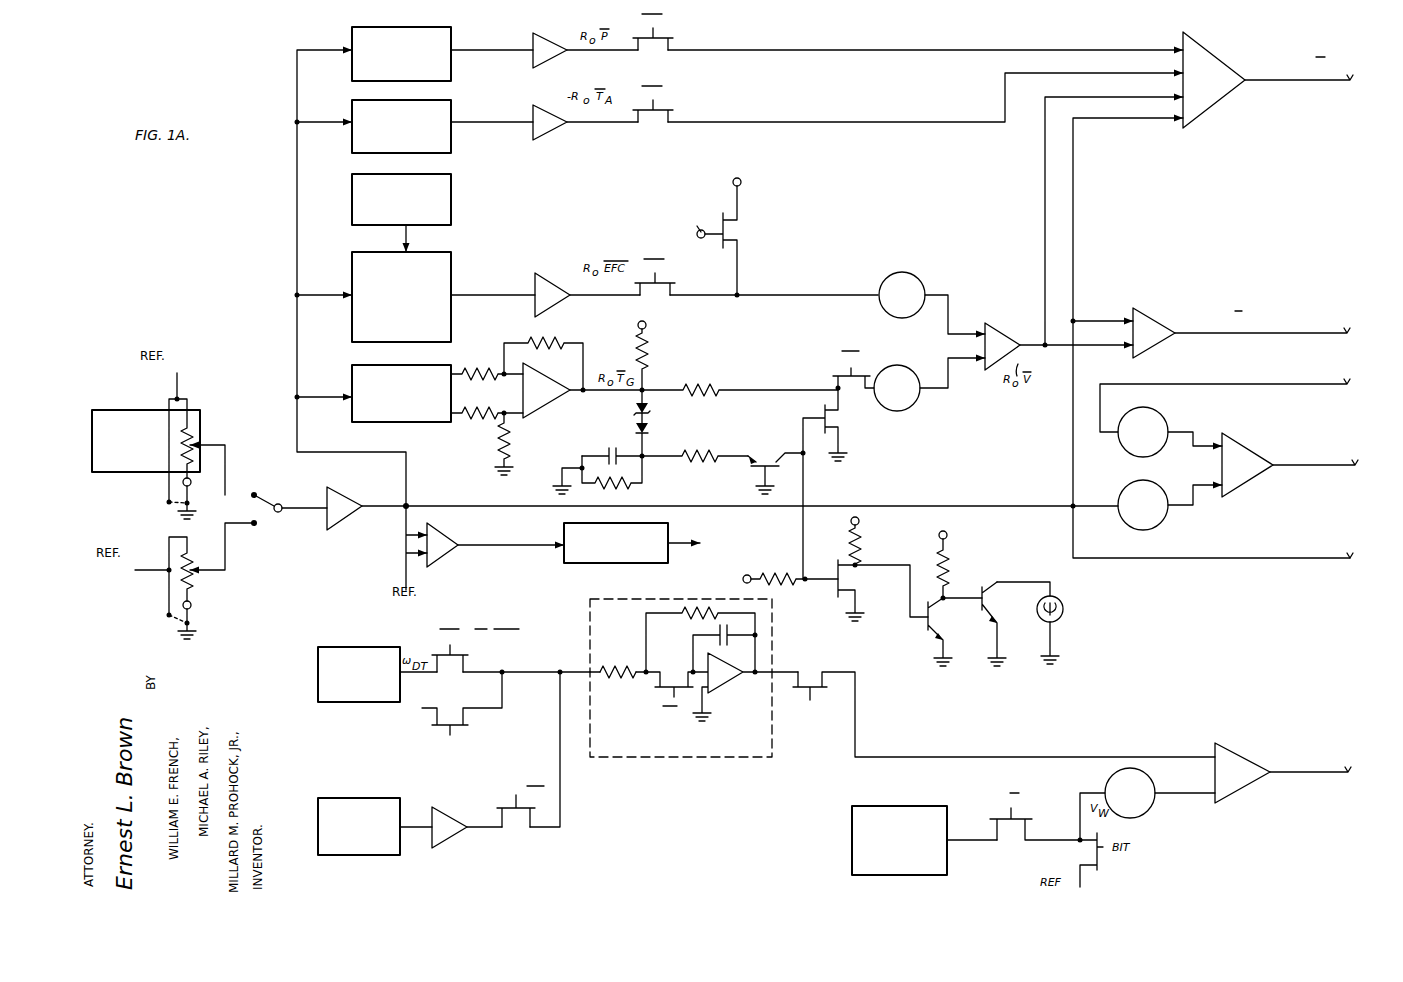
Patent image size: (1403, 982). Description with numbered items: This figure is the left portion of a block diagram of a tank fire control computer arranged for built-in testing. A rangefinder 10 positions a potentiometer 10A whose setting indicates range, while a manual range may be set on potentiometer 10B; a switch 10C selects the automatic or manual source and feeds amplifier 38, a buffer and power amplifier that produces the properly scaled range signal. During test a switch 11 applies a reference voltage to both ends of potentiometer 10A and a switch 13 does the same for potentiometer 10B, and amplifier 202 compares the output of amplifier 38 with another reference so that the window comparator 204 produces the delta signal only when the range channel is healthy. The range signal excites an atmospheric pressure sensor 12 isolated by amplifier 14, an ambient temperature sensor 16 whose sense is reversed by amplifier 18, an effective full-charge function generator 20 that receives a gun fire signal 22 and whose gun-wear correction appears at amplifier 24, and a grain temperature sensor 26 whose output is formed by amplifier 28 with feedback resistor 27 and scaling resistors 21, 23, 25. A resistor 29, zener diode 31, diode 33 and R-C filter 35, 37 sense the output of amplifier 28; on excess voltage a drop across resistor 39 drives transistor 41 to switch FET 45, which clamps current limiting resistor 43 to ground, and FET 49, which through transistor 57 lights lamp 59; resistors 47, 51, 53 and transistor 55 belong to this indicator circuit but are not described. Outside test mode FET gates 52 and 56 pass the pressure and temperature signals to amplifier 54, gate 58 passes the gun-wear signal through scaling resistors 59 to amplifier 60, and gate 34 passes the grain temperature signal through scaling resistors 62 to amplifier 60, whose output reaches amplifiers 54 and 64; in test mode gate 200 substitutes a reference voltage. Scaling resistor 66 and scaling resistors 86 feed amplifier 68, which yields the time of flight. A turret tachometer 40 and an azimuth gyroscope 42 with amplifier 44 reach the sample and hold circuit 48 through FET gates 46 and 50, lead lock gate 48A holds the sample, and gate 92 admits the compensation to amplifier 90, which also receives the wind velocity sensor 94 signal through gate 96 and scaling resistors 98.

The rangefinder 10 is at (122, 410).
The potentiometer 10A is at (195, 432).
The potentiometer 10B is at (195, 583).
The switch 10C is at (262, 508).
The switch 11 is at (192, 482).
The atmospheric pressure sensor 12 is at (451, 27).
The switch 13 is at (193, 612).
The amplifier 14 is at (530, 58).
The ambient temperature sensor 16 is at (451, 100).
The amplifier 18 is at (555, 128).
The effective full-charge function generator 20 is at (451, 252).
The scaling resistor 21 is at (512, 440).
The gun fire signal 22 is at (451, 174).
The scaling resistor 23 is at (487, 426).
The amplifier 24 is at (533, 303).
The scaling resistor 25 is at (478, 366).
The grain temperature sensor 26 is at (352, 374).
The feedback resistor 27 is at (552, 336).
The amplifier 28 is at (553, 398).
The resistor 29 is at (648, 352).
The zener diode 31 is at (650, 408).
The diode 33 is at (650, 430).
The FET gate 34 is at (858, 366).
The R-C filter resistor 35 is at (612, 480).
The R-C filter capacitor 37 is at (612, 445).
The amplifier 38 is at (340, 497).
The resistor 39 is at (702, 449).
The transistor 41 is at (768, 450).
The current limiting resistor 43 is at (703, 383).
The FET 45 is at (830, 418).
The turret tachometer 40 is at (345, 647).
The azimuth gyroscope 42 is at (360, 855).
The amplifier 44 is at (450, 840).
The FET gate 46 is at (468, 655).
The resistor 47 is at (780, 572).
The sample and hold circuit 48 is at (694, 687).
The FET gate 48A is at (652, 682).
The FET 49 is at (835, 588).
The FET gate 50 is at (520, 820).
The resistor 51 is at (860, 545).
The FET gate 52 is at (673, 38).
The resistor 53 is at (950, 570).
The amplifier 54 is at (1222, 95).
The transistor 55 is at (922, 620).
The FET gate 56 is at (673, 110).
The transistor 57 is at (986, 602).
The FET gate 58 is at (675, 283).
The scaling resistors 59 is at (918, 277).
The amplifier 60 is at (1000, 332).
The scaling resistors 62 is at (912, 370).
The amplifier 64 is at (1148, 314).
The scaling resistor 66 is at (1143, 530).
The amplifier 68 is at (1240, 444).
The scaling resistors 86 is at (1160, 414).
The amplifier 90 is at (1240, 765).
The FET gate 92 is at (830, 686).
The wind velocity sensor 94 is at (852, 860).
The FET gate 96 is at (1010, 828).
The scaling resistors 98 is at (1148, 777).
The FET gate 200 is at (740, 228).
The amplifier 202 is at (445, 535).
The window comparator 204 is at (572, 554).